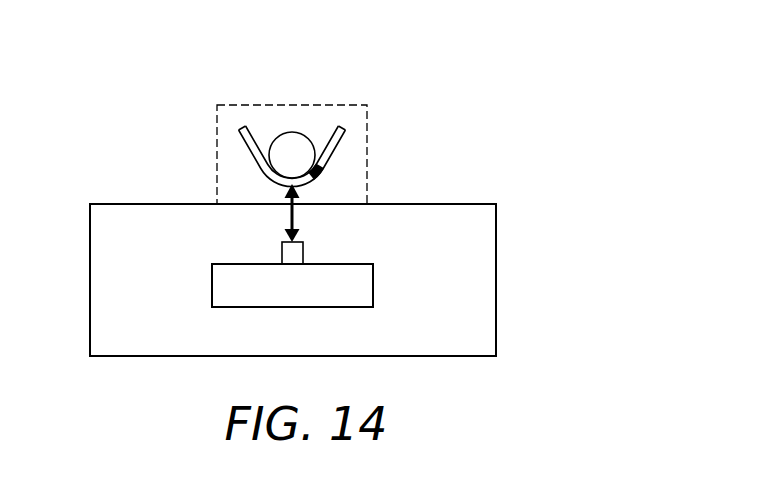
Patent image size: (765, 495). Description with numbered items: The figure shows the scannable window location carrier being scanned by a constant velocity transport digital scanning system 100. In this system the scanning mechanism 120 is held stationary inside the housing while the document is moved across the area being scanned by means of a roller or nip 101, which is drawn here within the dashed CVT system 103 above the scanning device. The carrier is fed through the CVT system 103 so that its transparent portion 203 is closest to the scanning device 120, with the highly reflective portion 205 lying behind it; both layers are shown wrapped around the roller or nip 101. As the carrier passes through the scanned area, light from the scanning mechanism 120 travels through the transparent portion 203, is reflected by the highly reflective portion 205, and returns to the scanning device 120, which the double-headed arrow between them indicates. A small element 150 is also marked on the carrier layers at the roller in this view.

The CVT scanning system 100 is at (468, 207).
The scanning mechanism 120 is at (373, 288).
The CVT system 103 is at (368, 122).
The roller or nip 101 is at (293, 132).
The highly reflective portion 205 is at (330, 130).
The transparent portion 203 is at (338, 148).
The sensor element 150 is at (318, 174).